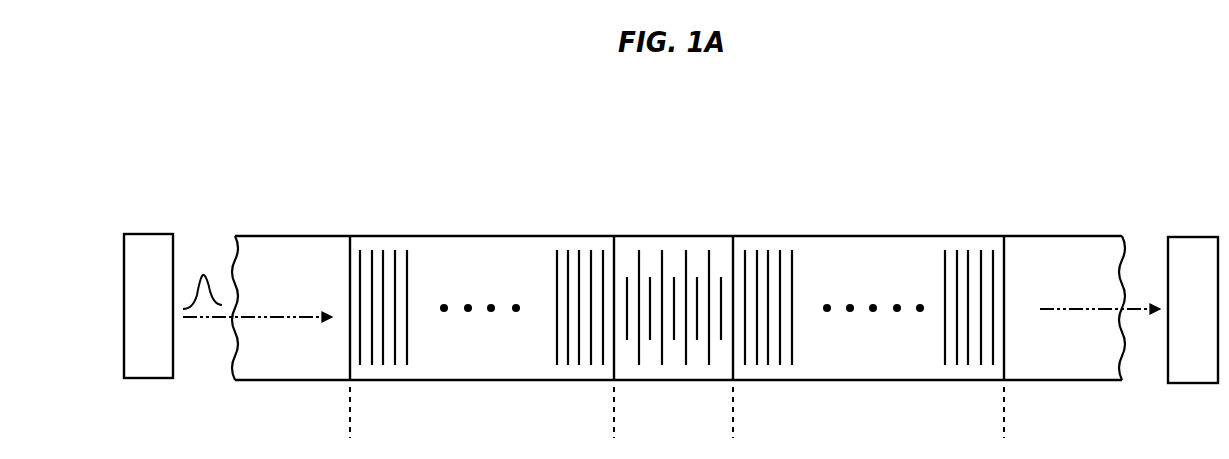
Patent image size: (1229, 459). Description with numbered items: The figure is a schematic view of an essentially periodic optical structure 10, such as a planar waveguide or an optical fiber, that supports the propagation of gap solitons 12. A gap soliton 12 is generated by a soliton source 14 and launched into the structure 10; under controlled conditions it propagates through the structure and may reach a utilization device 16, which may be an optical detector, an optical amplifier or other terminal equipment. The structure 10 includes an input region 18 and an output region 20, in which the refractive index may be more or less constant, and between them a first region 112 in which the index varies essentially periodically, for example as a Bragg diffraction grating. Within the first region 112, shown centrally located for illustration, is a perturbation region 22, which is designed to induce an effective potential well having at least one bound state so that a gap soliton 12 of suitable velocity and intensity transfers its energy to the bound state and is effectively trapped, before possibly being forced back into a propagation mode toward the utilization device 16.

The essentially periodic optical structure 10 is at (1040, 111).
The gap soliton 12 is at (203, 272).
The soliton source 14 is at (148, 366).
The utilization device 16 is at (1190, 370).
The input region 18 is at (286, 366).
The output region 20 is at (1058, 370).
The perturbation region 22 is at (733, 236).
The first region 112 is at (1004, 236).